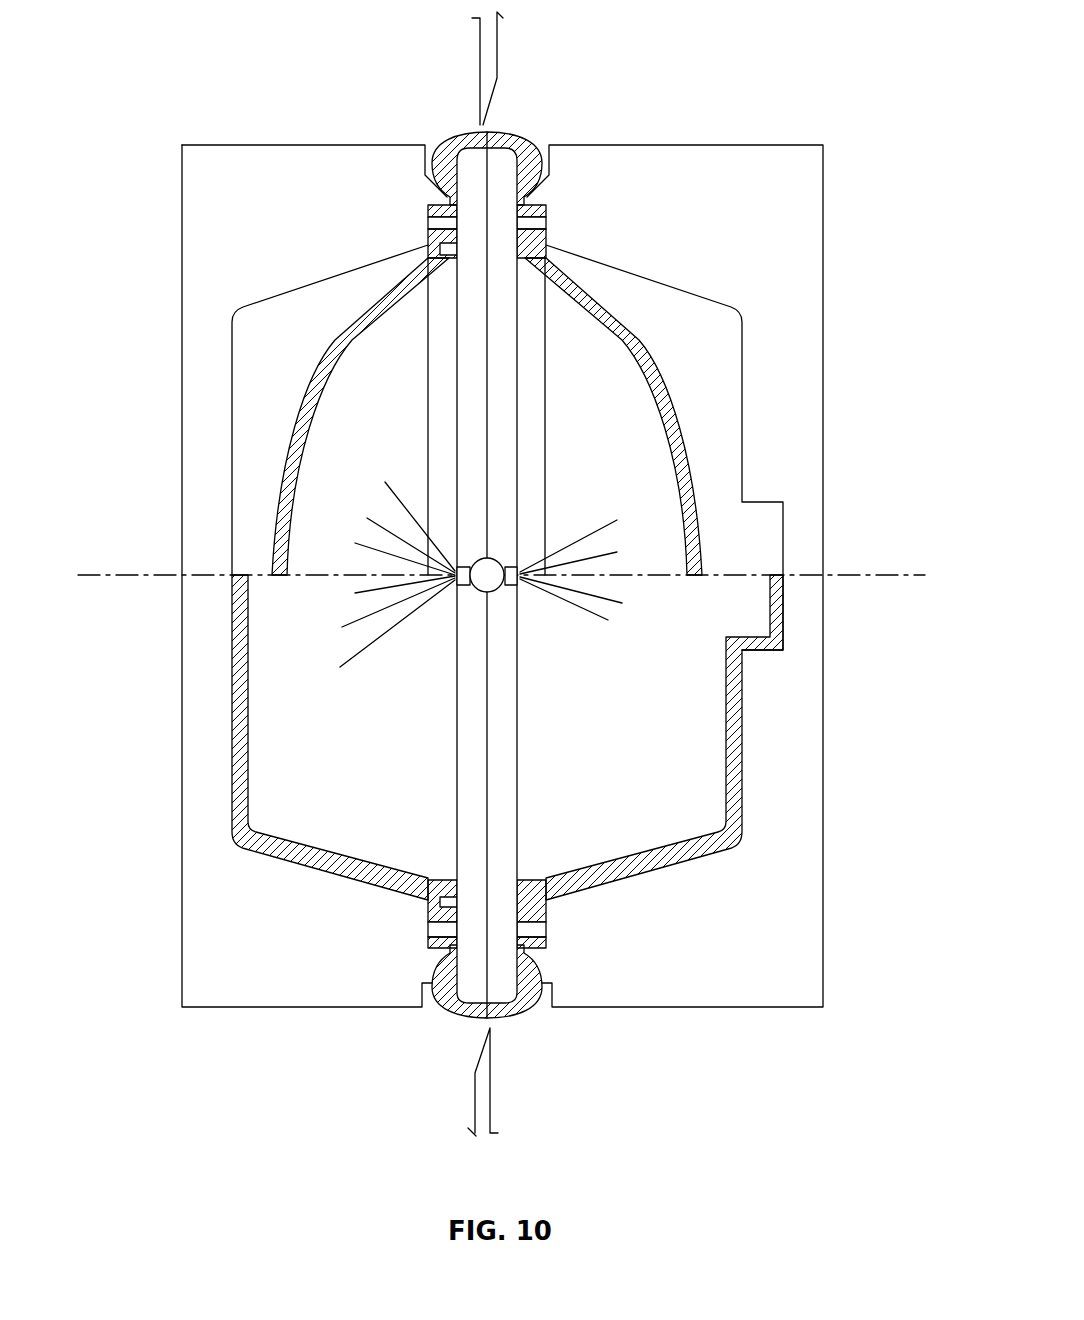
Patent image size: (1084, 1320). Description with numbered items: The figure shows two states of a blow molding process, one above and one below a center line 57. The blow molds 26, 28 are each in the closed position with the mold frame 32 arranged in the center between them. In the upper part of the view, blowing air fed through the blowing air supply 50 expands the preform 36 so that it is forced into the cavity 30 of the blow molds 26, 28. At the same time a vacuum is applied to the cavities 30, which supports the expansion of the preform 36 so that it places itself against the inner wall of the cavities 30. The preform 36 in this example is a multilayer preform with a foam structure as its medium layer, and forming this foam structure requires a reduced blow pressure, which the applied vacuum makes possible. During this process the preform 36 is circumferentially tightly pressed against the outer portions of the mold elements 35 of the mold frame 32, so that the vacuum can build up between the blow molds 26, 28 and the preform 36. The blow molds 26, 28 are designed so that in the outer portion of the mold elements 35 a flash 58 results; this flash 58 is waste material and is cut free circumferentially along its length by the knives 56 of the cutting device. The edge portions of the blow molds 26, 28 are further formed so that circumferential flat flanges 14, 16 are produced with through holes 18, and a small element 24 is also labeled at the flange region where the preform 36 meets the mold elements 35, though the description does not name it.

The flat flange 14 is at (430, 910).
The flat flange 16 is at (538, 212).
The through hole 18 is at (533, 220).
The groove 24 is at (450, 250).
The blow mold 26 is at (397, 208).
The blow mold 28 is at (712, 177).
The cavity 30 is at (268, 352).
The mold frame 32 is at (488, 735).
The mold element 35 is at (462, 447).
The preform 36 is at (345, 338).
The blowing air supply 50 is at (485, 583).
The knife 56 is at (497, 47).
The center line 57 is at (860, 572).
The flash 58 is at (518, 138).